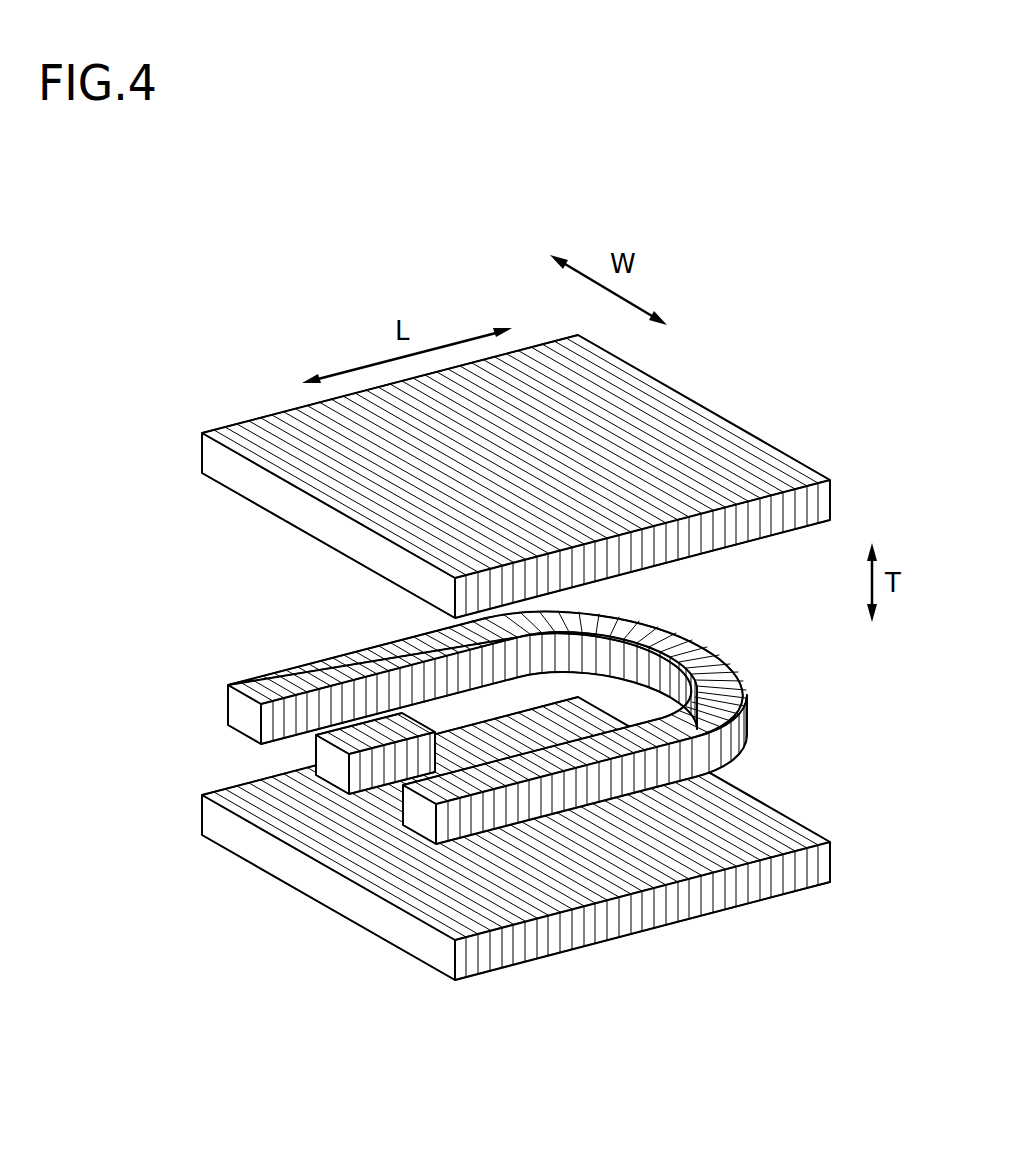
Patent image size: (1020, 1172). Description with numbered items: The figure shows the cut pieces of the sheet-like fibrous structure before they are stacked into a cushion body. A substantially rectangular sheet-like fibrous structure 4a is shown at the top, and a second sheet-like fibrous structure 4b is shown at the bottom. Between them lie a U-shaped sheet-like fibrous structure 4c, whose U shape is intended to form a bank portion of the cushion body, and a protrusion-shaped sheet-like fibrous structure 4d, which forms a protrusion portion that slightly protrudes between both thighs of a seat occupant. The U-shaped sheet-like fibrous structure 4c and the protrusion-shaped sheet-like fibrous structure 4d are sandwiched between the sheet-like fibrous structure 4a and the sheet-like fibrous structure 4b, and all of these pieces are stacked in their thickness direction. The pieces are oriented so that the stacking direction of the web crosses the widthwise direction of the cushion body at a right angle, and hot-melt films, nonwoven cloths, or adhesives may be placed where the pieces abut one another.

The sheet-like fibrous structure 4a is at (697, 430).
The sheet-like fibrous structure 4b is at (772, 832).
The U-shaped sheet-like fibrous structure 4c is at (708, 674).
The protrusion-shaped sheet-like fibrous structure 4d is at (317, 755).